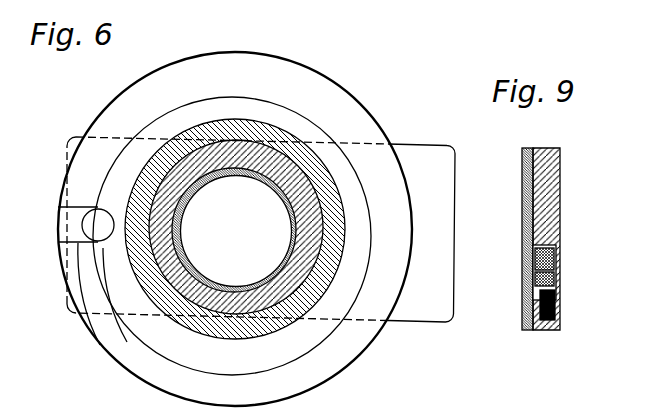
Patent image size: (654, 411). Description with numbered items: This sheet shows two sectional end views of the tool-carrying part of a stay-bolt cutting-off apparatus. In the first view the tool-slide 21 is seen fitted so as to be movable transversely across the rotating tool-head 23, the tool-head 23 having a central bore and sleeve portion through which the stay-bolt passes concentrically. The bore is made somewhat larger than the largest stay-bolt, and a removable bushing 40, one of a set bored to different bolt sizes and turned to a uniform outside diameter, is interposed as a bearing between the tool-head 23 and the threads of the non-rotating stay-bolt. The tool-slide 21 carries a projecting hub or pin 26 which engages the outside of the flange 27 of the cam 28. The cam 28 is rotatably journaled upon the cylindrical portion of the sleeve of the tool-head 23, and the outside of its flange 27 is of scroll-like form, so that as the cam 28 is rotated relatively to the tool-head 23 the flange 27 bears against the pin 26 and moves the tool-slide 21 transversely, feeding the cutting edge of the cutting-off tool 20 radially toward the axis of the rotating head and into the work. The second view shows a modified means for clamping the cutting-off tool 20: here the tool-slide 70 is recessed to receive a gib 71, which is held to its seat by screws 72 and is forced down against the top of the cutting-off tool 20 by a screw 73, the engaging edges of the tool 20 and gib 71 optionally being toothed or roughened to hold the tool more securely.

In FIG. 9, the cutting-off tool 20 is at (561, 210).
In FIG. 6, the tool-slide 21 is at (261, 229).
In FIG. 6, the tool-head 23 is at (203, 163).
In FIG. 6, the hub or pin 26 is at (90, 228).
In FIG. 6, the flange 27 is at (102, 294).
In FIG. 6, the cam 28 is at (208, 332).
In FIG. 6, the removable bushing 40 is at (293, 227).
In FIG. 9, the tool-slide 70 is at (561, 163).
In FIG. 9, the gib 71 is at (552, 283).
In FIG. 9, the screws 72 is at (556, 262).
In FIG. 9, the screw 73 is at (553, 310).